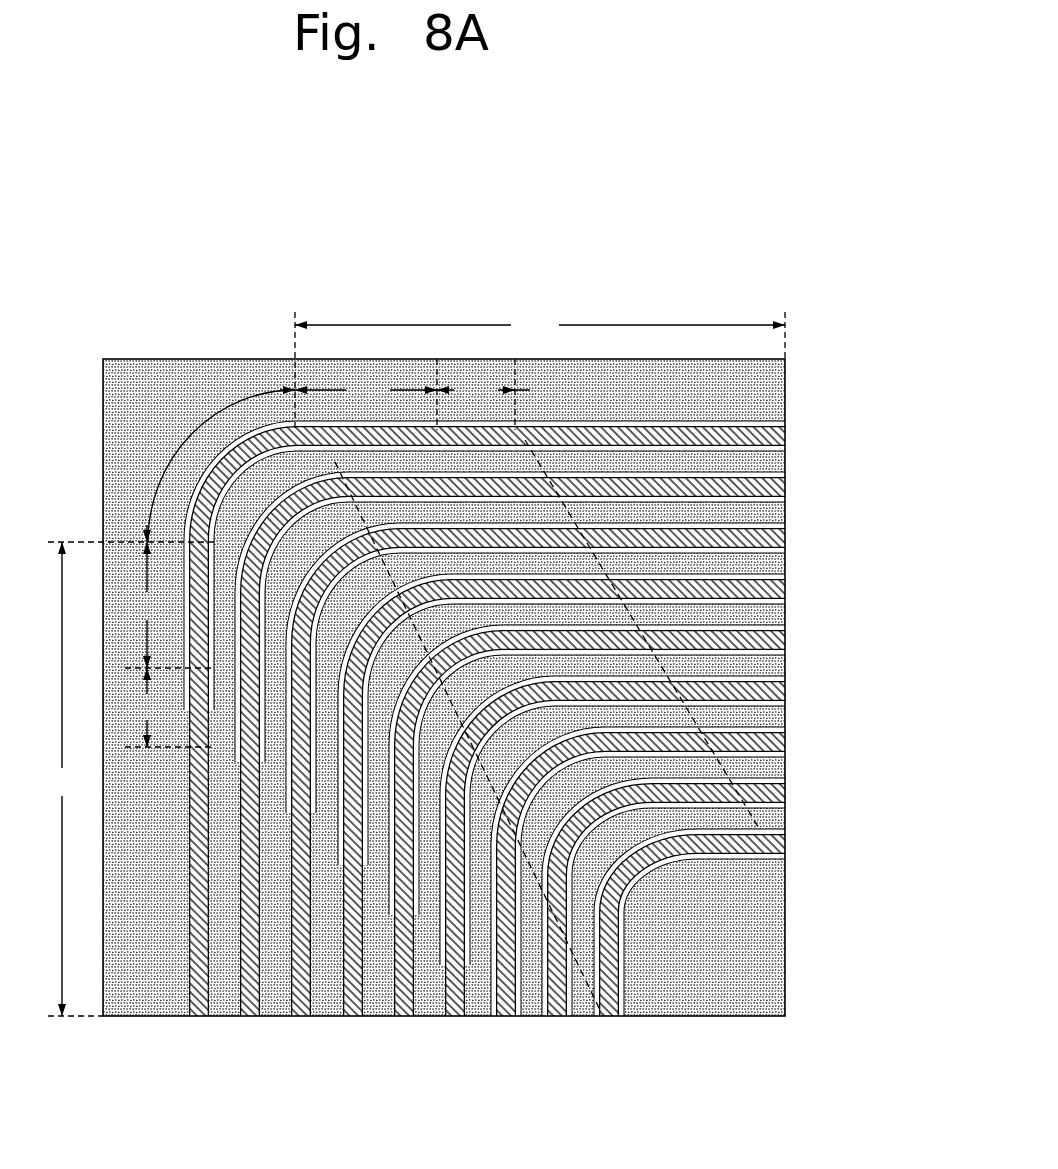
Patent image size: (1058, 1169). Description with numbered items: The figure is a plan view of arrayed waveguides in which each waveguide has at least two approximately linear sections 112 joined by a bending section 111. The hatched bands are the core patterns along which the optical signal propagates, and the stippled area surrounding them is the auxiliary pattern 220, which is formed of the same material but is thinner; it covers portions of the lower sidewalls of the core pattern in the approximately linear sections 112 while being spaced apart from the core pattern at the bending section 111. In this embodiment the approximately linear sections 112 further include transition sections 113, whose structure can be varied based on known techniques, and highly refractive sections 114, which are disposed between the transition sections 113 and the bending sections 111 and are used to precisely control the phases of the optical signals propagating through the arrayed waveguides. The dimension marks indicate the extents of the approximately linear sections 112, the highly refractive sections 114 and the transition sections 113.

The bending section 111 is at (240, 400).
The approximately linear section 112 is at (413, 663).
The transition section 113 is at (327, 553).
The highly refractive section 114 is at (281, 513).
The auxiliary pattern 220 is at (329, 1010).